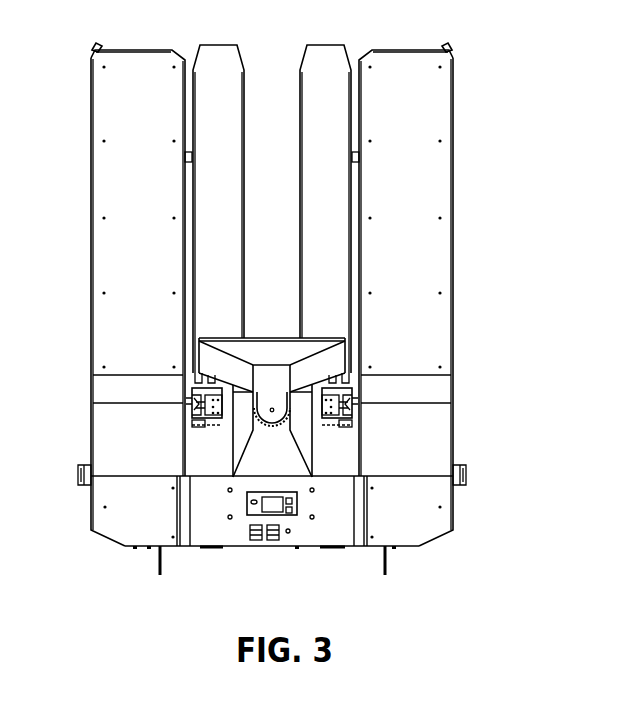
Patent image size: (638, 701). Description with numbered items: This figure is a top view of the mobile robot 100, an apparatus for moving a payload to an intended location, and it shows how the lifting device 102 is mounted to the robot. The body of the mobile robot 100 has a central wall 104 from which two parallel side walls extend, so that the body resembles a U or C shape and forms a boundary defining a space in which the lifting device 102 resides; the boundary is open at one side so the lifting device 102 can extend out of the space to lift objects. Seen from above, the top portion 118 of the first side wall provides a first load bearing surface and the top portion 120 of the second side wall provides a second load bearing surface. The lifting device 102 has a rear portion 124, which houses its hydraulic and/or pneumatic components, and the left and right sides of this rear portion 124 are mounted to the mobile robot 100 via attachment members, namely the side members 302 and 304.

The mobile robot 100 is at (513, 144).
The lifting device 102 is at (223, 232).
The central wall 104 is at (283, 540).
The top portion of the first side wall 118 is at (105, 241).
The top portion of the second side wall 120 is at (437, 241).
The rear portion 124 is at (240, 428).
The side member 302 is at (200, 408).
The side member 304 is at (333, 418).